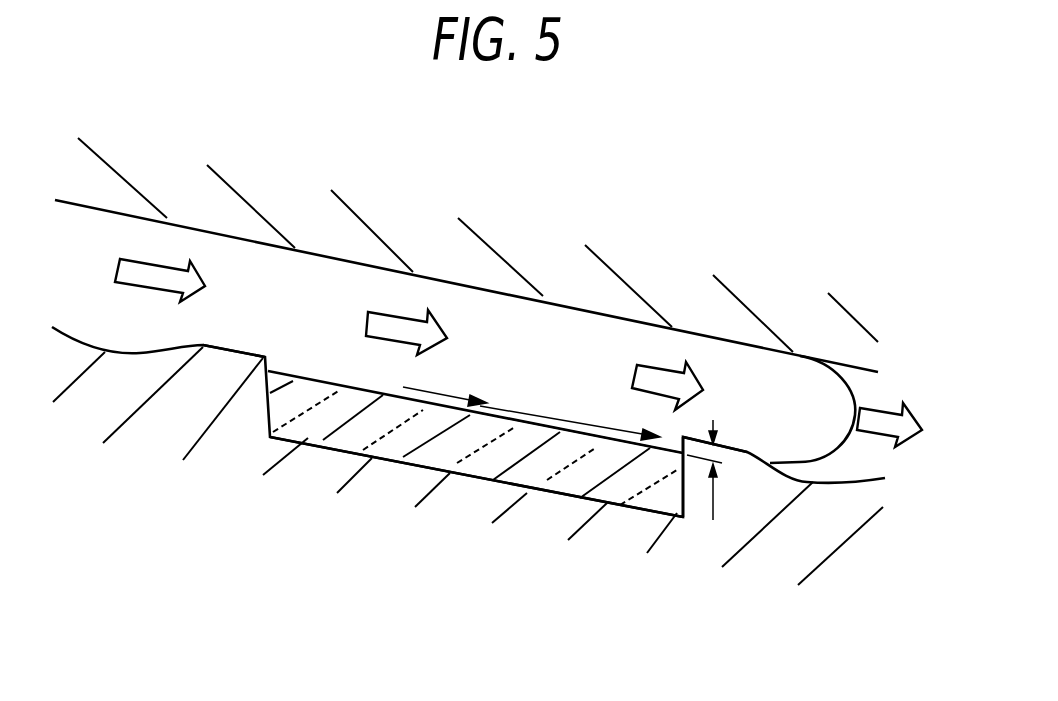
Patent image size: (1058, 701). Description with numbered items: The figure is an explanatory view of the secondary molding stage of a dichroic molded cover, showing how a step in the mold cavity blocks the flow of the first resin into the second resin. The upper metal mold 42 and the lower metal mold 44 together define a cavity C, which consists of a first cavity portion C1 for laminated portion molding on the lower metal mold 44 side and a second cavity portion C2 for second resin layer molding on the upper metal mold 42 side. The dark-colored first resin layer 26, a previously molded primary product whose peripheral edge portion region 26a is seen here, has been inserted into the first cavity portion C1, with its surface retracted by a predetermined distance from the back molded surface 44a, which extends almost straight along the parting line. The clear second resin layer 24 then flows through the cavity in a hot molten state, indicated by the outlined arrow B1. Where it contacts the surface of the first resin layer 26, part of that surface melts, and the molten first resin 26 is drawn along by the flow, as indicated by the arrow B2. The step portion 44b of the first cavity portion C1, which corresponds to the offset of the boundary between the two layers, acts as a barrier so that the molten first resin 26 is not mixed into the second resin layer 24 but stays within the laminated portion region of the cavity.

The second resin layer 24 is at (588, 340).
The first resin layer 26 is at (432, 457).
The peripheral edge portion region 26a is at (527, 420).
The upper metal mold 42 is at (805, 292).
The lower metal mold 44 is at (853, 563).
The back molded surface 44a is at (220, 348).
The step portion 44b is at (670, 520).
The flow of the second resin B1 is at (602, 423).
The flow of the molten first resin B2 is at (448, 397).
The cavity C is at (228, 277).
The first cavity portion C1 is at (308, 252).
The second cavity portion C2 is at (310, 450).